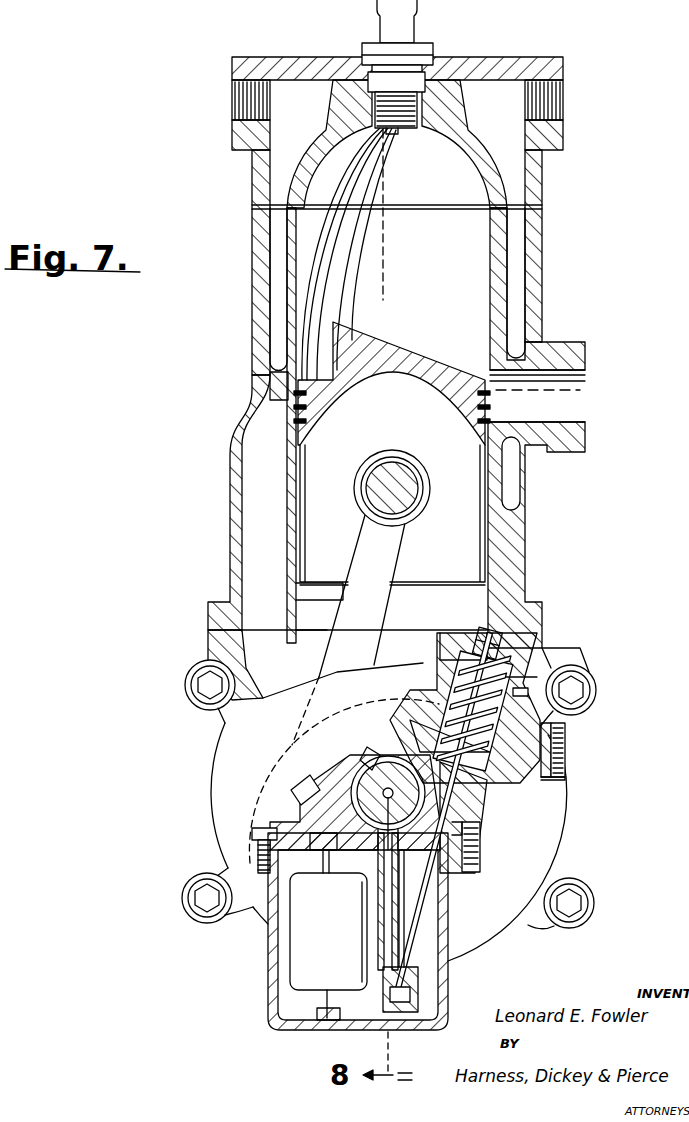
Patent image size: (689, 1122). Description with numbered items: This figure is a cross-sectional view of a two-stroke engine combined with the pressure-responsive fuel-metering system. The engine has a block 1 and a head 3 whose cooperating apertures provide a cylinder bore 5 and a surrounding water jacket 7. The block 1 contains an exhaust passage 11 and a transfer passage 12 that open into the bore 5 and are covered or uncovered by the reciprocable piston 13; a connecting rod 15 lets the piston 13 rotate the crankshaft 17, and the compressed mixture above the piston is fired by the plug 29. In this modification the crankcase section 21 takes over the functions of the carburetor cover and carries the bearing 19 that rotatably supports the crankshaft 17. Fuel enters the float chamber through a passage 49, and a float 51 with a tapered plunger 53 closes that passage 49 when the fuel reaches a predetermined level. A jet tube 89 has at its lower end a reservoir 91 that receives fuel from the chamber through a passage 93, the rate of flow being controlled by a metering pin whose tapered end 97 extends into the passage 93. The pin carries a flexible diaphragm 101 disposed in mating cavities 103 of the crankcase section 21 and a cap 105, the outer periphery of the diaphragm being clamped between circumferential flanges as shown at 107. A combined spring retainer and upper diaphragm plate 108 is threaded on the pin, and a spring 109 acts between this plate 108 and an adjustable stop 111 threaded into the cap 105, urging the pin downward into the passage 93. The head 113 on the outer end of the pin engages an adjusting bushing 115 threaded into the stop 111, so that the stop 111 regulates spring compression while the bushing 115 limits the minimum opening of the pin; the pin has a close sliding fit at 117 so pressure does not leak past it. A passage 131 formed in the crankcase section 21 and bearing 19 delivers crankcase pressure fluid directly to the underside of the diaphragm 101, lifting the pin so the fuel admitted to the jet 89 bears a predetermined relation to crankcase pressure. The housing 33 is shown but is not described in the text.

The block 1 is at (520, 546).
The head 3 is at (548, 143).
The cylinder bore 5 is at (483, 272).
The water jacket 7 is at (518, 183).
The exhaust passage 11 is at (585, 381).
The transfer passage 12 is at (247, 452).
The piston 13 is at (383, 345).
The connecting rod 15 is at (388, 552).
The crankshaft 17 is at (392, 793).
The bearing 19 is at (480, 842).
The crankcase section 21 is at (470, 832).
The plug 29 is at (404, 24).
The housing 33 is at (268, 993).
The passage 49 is at (320, 788).
The float 51 is at (328, 931).
The tapered plunger 53 is at (325, 872).
The jet tube 89 is at (395, 880).
The reservoir 91 is at (366, 988).
The passage 93 is at (420, 963).
The tapered end 97 is at (420, 986).
The flexible diaphragm 101 is at (513, 768).
The cavities 103 is at (540, 741).
The cap 105 is at (565, 726).
The clamped flanges 107 is at (560, 765).
The combined spring retainer and upper diaphragm plate 108 is at (440, 718).
The spring 109 is at (528, 692).
The adjustable stop 111 is at (537, 663).
The head 113 is at (494, 638).
The adjusting bushing 115 is at (503, 645).
The close sliding fit 117 is at (427, 897).
The passage 131 is at (367, 748).